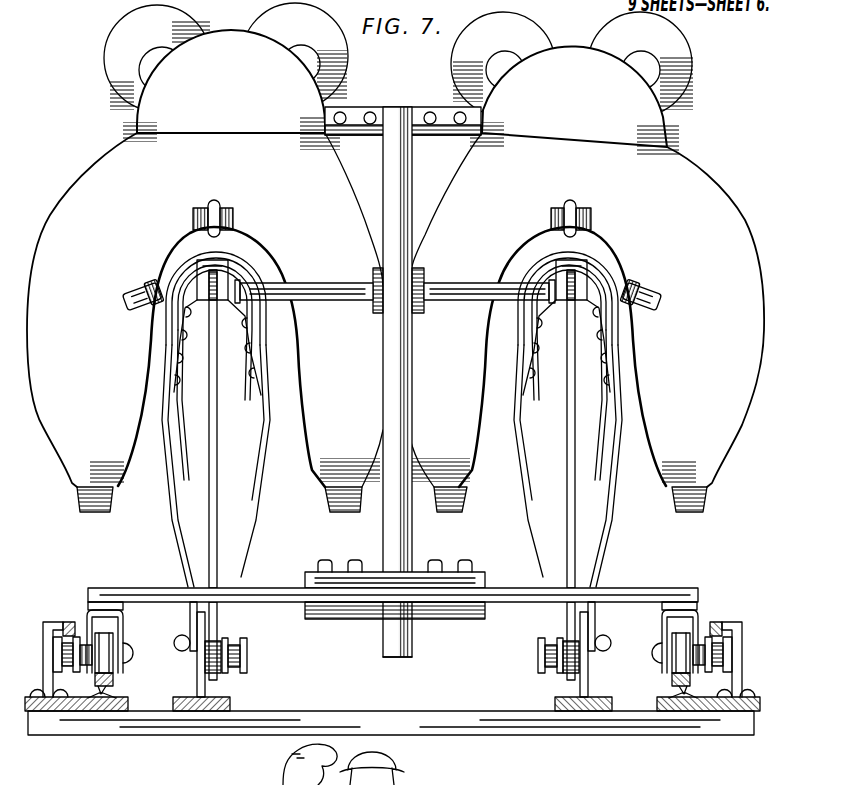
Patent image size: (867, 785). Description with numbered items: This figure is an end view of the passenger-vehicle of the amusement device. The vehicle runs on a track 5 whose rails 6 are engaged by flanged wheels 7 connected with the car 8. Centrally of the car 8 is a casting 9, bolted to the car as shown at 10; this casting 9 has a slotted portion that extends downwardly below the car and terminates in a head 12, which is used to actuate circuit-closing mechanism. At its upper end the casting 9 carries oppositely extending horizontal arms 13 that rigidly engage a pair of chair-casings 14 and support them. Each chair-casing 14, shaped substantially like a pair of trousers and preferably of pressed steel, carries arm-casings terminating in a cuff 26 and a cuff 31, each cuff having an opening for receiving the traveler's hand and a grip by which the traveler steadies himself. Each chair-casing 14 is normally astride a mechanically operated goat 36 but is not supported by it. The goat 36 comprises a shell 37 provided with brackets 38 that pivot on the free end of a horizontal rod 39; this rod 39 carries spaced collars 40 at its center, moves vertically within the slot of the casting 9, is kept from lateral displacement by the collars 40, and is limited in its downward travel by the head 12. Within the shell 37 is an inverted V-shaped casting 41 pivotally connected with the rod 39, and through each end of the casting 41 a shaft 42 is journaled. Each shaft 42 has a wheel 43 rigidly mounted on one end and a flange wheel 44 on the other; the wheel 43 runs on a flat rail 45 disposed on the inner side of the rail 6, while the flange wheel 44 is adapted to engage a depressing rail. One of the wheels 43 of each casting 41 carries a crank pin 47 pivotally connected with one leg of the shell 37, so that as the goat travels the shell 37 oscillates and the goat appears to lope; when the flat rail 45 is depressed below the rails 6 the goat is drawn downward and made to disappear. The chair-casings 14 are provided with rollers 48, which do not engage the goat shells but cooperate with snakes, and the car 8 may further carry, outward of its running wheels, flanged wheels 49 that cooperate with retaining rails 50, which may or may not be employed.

The track 5 is at (391, 707).
The rails 6 is at (100, 700).
The flanged wheels 7 is at (118, 672).
The car 8 is at (145, 588).
The casting 9 is at (412, 212).
The bolts 10 is at (445, 565).
The head 12 is at (413, 655).
The horizontal arms 13 is at (432, 107).
The chair-casing 14 is at (68, 188).
The cuff 26 is at (111, 43).
The cuff 31 is at (283, 45).
The goat 36 is at (392, 419).
The shell 37 is at (166, 505).
The brackets 38 is at (176, 365).
The horizontal rod 39 is at (353, 300).
The spaced collars 40 is at (420, 272).
The inverted V-shaped casting 41 is at (217, 537).
The shaft 42 is at (228, 641).
The wheel 43 is at (210, 690).
The flange wheel 44 is at (250, 660).
The flat rail 45 is at (215, 713).
The crank pin 47 is at (178, 640).
The rollers 48 is at (124, 300).
The flanged wheels 49 is at (58, 658).
The retaining rails 50 is at (70, 622).